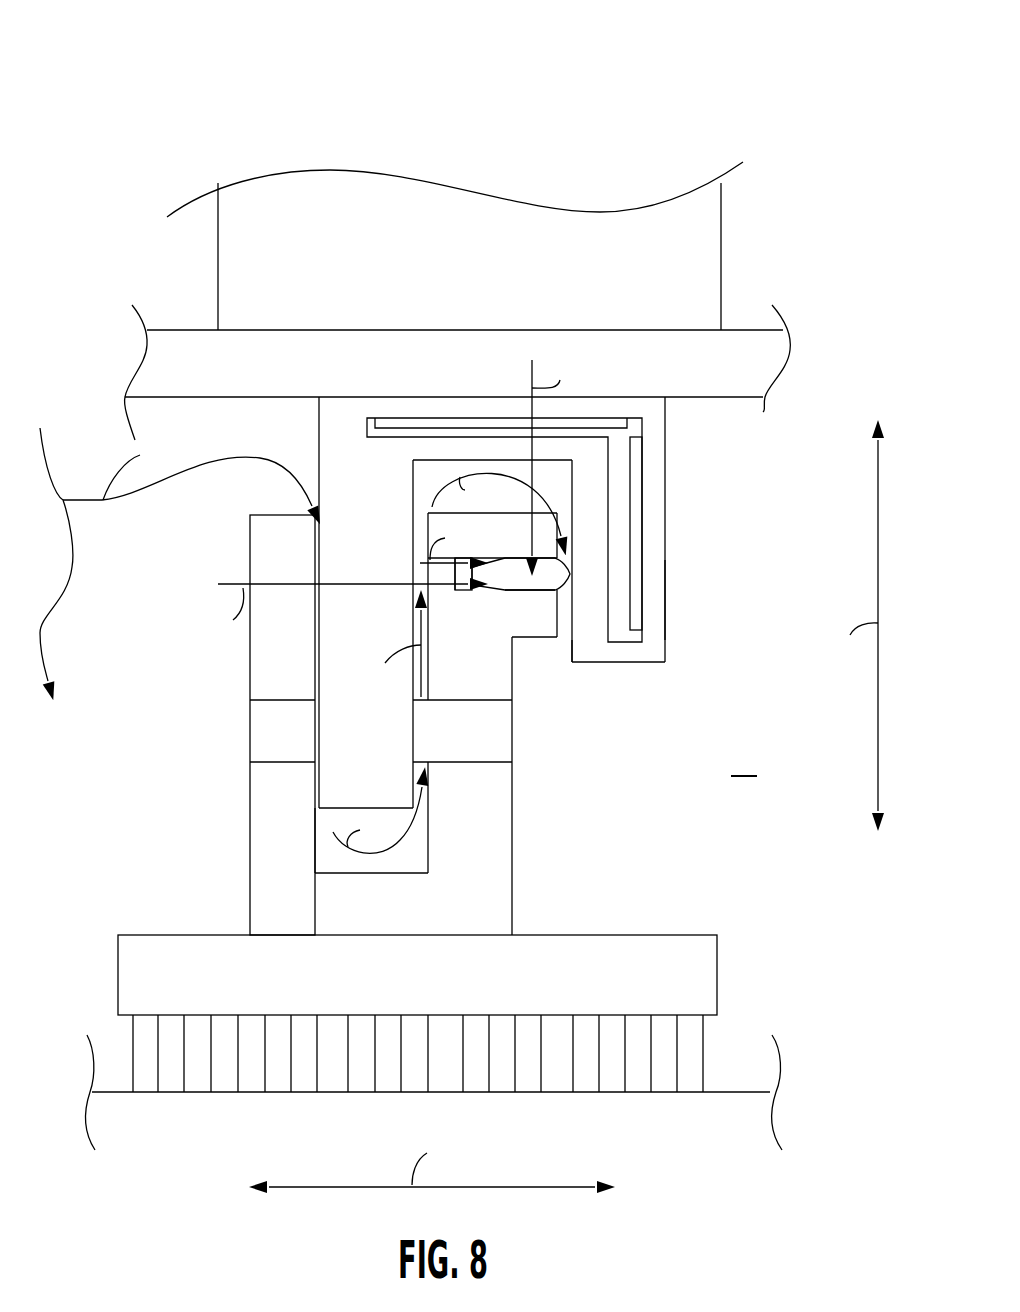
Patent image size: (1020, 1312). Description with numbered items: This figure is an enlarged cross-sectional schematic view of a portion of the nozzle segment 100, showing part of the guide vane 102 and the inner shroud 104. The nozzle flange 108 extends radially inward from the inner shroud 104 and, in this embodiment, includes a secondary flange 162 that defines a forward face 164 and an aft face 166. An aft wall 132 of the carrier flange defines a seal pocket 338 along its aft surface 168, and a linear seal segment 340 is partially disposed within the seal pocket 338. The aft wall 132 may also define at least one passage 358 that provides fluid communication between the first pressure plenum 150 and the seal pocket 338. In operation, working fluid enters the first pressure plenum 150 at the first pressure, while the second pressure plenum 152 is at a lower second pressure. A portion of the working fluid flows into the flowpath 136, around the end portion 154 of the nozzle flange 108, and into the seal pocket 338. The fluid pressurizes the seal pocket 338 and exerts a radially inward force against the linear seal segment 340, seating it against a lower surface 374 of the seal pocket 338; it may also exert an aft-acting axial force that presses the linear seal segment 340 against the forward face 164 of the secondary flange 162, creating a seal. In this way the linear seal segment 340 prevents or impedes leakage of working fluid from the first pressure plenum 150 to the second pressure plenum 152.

The nozzle segment 100 is at (702, 123).
The guide vane 102 is at (497, 273).
The inner shroud 104 is at (727, 373).
The nozzle flange 108 is at (385, 493).
The aft wall 132 is at (485, 848).
The flowpath 136 is at (320, 667).
The first pressure plenum 150 is at (150, 777).
The second pressure plenum 152 is at (760, 723).
The end portion 154 is at (360, 807).
The secondary flange 162 is at (655, 487).
The forward face 164 is at (570, 657).
The aft face 166 is at (692, 583).
The aft surface 168 is at (512, 787).
The seal pocket 338 is at (457, 577).
The linear seal segment 340 is at (540, 588).
The passage 358 is at (455, 575).
The lower surface 374 is at (532, 592).